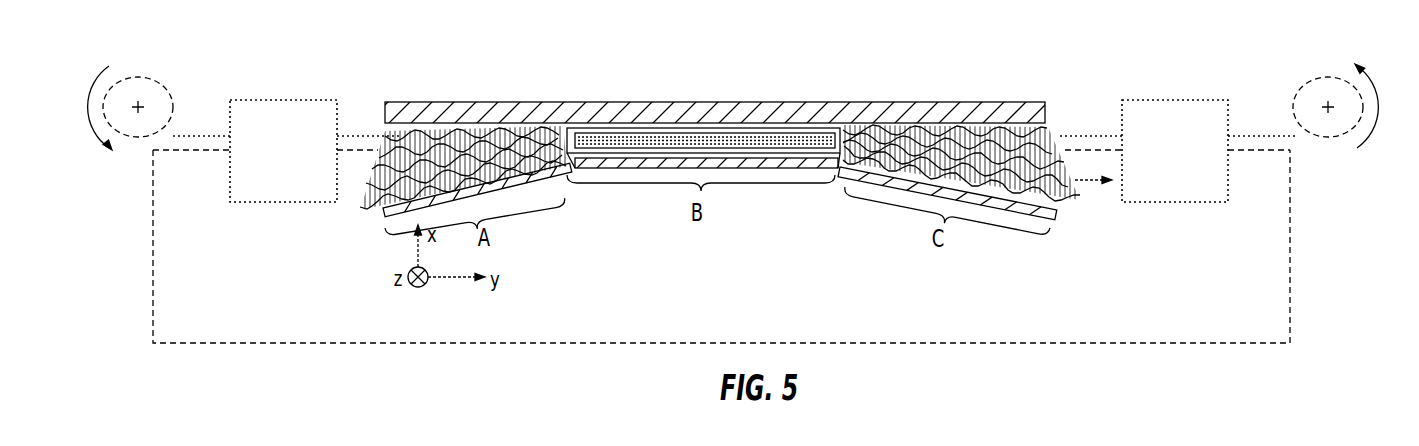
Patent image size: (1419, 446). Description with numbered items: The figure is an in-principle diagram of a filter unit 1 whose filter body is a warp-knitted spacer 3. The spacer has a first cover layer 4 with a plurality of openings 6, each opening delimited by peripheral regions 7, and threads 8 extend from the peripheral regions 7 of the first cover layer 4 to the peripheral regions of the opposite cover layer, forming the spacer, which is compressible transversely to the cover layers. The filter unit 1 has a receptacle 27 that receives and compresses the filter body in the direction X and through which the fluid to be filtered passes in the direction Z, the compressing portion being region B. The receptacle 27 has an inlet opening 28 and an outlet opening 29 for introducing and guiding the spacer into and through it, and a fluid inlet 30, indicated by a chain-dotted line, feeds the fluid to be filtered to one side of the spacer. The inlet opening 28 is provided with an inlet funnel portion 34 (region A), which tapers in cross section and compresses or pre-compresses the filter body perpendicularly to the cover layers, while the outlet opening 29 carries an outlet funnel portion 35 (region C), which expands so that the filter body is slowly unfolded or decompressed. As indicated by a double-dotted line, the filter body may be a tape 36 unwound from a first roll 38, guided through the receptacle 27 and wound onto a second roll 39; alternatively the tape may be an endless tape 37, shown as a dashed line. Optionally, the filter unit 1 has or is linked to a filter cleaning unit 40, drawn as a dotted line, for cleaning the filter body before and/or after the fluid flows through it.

The filter unit 1 is at (460, 95).
The warp-knitted spacer 3 is at (390, 140).
The first cover layer 4 is at (380, 133).
The openings 6 is at (412, 130).
The peripheral regions 7 is at (1010, 138).
The threads 8 is at (1010, 133).
The receptacle 27 is at (643, 170).
The inlet opening 28 is at (573, 162).
The outlet opening 29 is at (833, 170).
The fluid inlet 30 is at (622, 130).
The inlet funnel portion 34 is at (518, 190).
The outlet funnel portion 35 is at (930, 197).
The tape 36 is at (1052, 140).
The endless tape 37 is at (1258, 150).
The first roll 38 is at (155, 97).
The second roll 39 is at (1313, 102).
The filter cleaning unit 40 is at (272, 165).